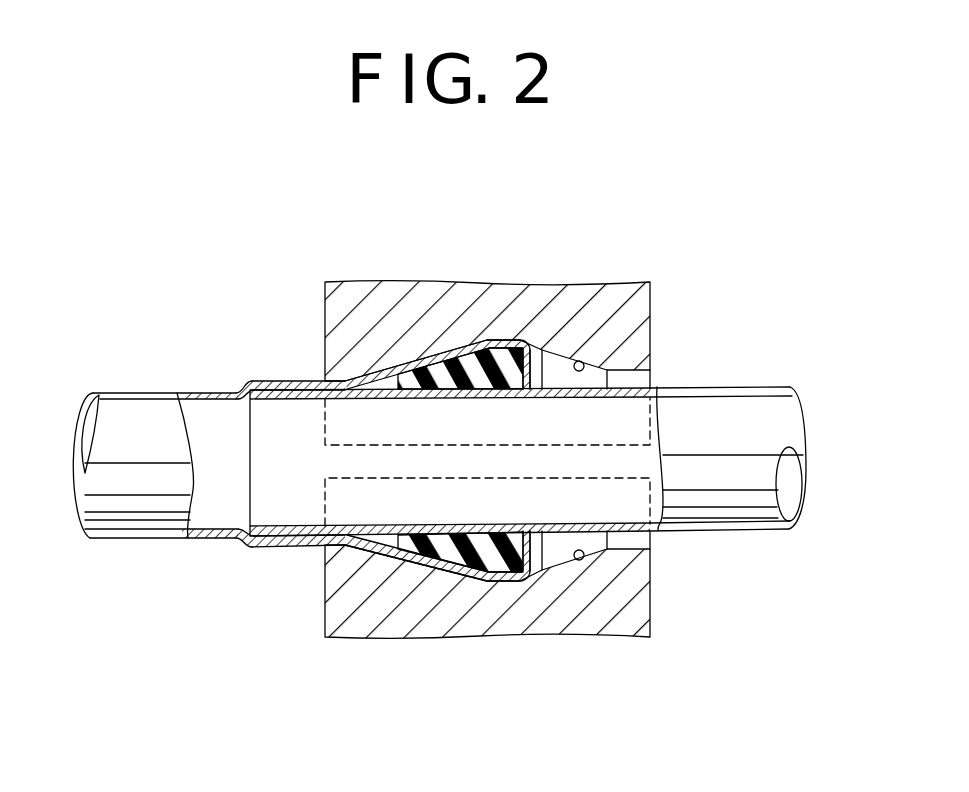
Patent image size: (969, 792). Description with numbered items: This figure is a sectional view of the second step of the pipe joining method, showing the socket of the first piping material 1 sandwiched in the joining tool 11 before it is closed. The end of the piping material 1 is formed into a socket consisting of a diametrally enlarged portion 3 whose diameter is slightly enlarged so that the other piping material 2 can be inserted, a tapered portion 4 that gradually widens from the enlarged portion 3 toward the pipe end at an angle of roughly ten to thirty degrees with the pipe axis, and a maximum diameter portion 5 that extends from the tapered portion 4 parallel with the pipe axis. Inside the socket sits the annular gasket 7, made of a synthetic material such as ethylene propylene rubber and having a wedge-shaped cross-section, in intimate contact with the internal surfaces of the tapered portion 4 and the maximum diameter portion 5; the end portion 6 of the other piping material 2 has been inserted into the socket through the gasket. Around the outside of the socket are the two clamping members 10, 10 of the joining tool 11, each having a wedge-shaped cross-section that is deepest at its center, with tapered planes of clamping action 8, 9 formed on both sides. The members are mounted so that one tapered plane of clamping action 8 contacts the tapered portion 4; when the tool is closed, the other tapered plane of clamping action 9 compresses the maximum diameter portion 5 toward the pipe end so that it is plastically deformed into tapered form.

The piping material 1 is at (129, 393).
The piping material 2 is at (749, 388).
The diametrally enlarged portion 3 is at (242, 380).
The tapered portion 4 is at (407, 364).
The maximum diameter portion 5 is at (482, 339).
The end portion 6 is at (284, 381).
The annular gasket 7 is at (462, 342).
The tapered plane of clamping action 8 is at (437, 366).
The tapered plane of clamping action 9 is at (583, 361).
The clamping member 10 is at (527, 282).
The joining tool 11 is at (581, 256).